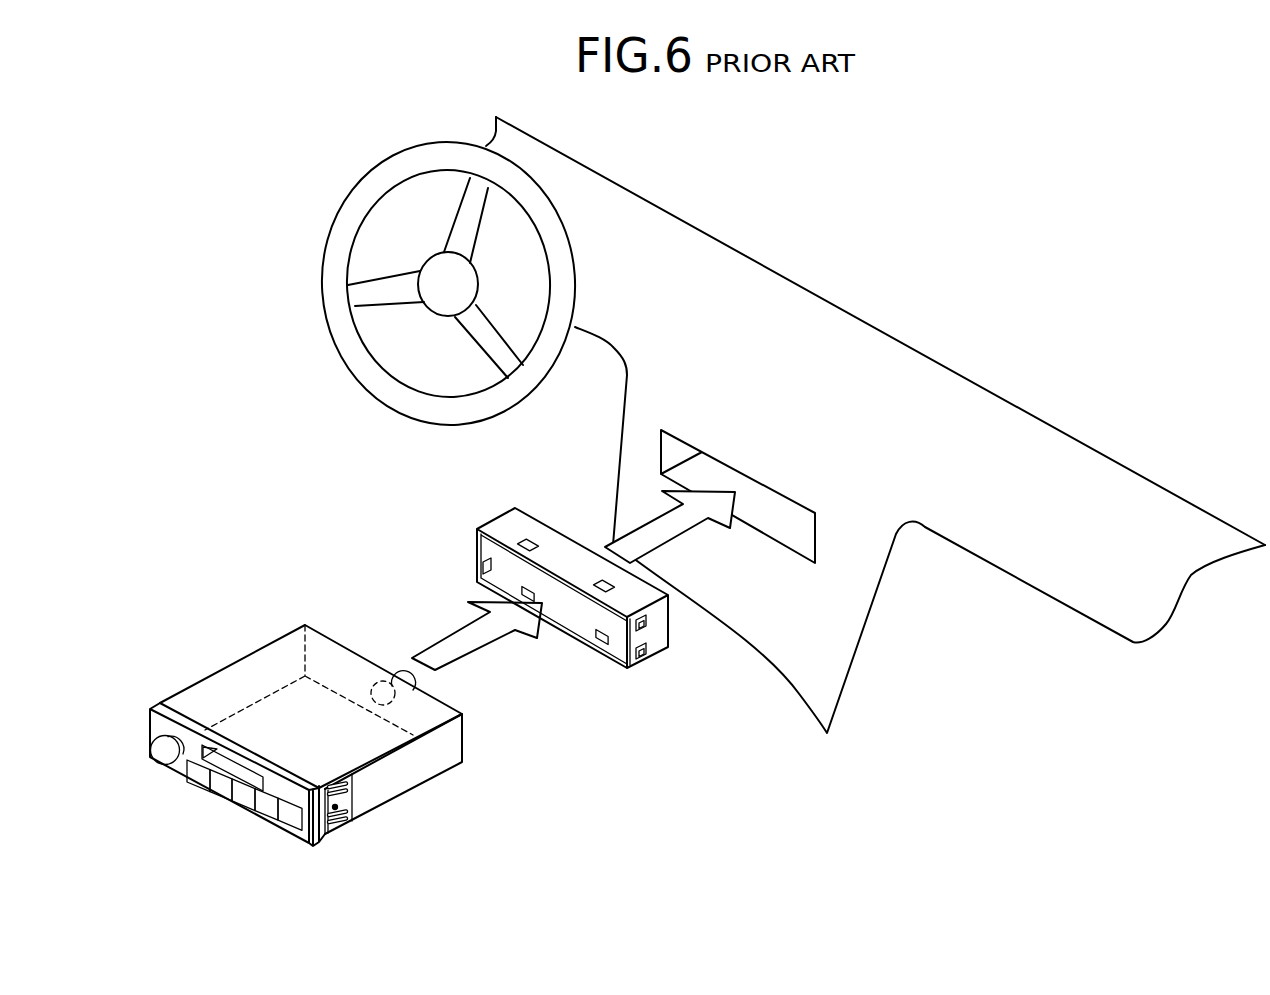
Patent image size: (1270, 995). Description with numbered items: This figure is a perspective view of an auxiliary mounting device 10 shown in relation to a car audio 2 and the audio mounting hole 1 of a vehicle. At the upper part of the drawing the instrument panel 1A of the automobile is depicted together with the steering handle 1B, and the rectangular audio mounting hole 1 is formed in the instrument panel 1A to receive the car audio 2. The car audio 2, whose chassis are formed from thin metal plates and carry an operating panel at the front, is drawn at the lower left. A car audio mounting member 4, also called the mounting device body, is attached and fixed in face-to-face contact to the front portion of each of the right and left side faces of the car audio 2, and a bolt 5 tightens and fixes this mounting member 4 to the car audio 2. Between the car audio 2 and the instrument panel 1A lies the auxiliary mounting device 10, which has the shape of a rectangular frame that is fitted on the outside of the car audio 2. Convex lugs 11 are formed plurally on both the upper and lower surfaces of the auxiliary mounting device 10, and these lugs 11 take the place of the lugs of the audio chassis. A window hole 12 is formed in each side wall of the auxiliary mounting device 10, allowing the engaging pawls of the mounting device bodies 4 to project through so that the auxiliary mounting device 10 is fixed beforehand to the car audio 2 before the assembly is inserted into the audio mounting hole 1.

The audio mounting hole 1 is at (782, 519).
The instrument panel 1A is at (792, 309).
The steering handle 1B is at (343, 328).
The car audio 2 is at (306, 735).
The car audio mounting member 4 is at (347, 797).
The bolt 5 is at (335, 807).
The auxiliary mounting device 10 is at (560, 566).
The convex lug 11 is at (530, 540).
The window hole 12 is at (485, 568).